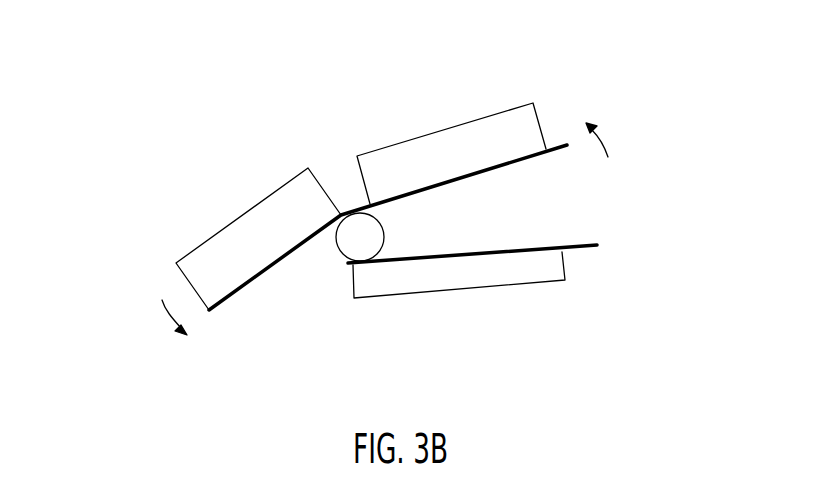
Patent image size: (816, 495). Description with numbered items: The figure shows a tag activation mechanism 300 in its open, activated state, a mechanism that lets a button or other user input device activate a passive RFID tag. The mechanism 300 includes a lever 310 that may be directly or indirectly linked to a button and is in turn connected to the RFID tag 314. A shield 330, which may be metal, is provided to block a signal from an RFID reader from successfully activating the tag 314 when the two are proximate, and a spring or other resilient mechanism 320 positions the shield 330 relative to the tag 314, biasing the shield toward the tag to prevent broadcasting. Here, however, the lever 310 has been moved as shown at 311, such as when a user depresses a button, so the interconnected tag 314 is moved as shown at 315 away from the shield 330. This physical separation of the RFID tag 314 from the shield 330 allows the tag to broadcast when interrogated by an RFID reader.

The tag activation mechanism 300 is at (133, 83).
The lever 310 is at (203, 243).
The lever movement 311 is at (167, 313).
The RFID tag 314 is at (395, 143).
The tag movement 315 is at (603, 143).
The spring or other resilient mechanism 320 is at (333, 258).
The shield 330 is at (527, 285).